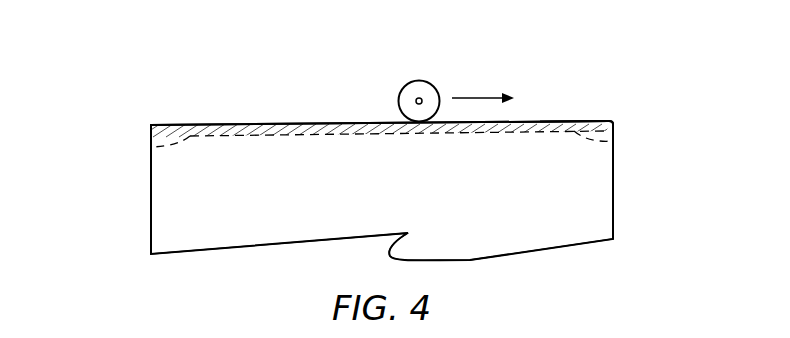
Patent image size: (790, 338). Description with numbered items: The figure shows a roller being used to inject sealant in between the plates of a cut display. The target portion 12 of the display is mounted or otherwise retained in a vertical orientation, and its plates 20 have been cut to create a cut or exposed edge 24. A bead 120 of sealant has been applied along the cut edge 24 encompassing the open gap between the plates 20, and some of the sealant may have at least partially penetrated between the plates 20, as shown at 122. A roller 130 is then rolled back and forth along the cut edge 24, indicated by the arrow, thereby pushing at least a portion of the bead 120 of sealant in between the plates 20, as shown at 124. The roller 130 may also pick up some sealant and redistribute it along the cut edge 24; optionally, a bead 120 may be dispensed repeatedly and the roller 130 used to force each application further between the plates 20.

The target portion 12 is at (111, 237).
The plates 20 is at (600, 213).
The cut edge 24 is at (222, 124).
The bead 120 is at (564, 120).
The partially penetrated sealant 122 is at (613, 141).
The sealant pushed between plates 124 is at (150, 146).
The roller 130 is at (449, 66).